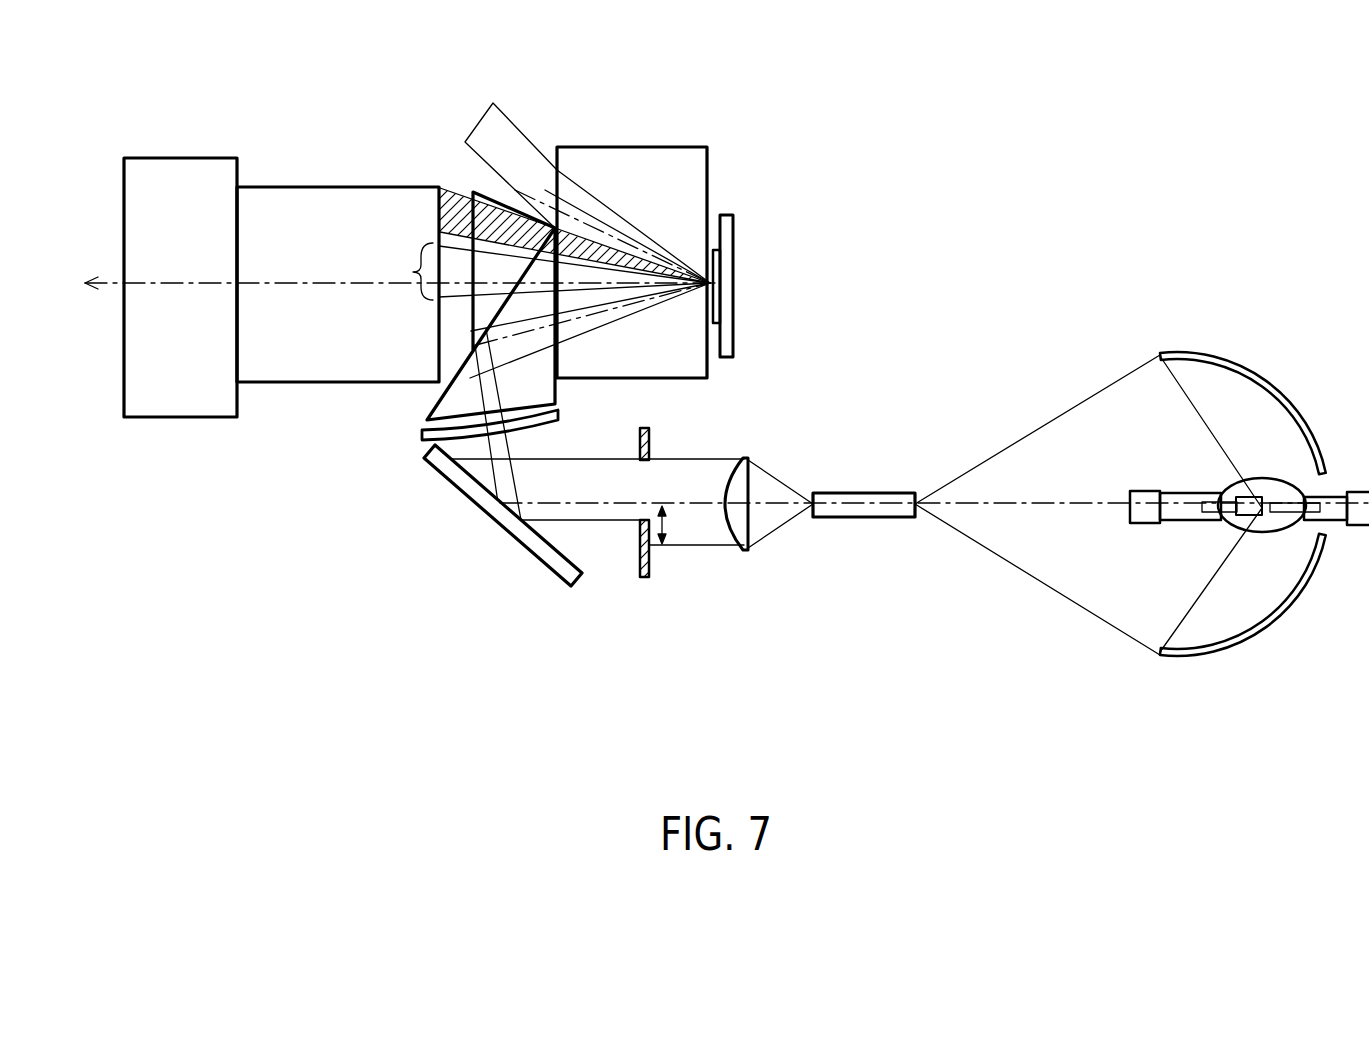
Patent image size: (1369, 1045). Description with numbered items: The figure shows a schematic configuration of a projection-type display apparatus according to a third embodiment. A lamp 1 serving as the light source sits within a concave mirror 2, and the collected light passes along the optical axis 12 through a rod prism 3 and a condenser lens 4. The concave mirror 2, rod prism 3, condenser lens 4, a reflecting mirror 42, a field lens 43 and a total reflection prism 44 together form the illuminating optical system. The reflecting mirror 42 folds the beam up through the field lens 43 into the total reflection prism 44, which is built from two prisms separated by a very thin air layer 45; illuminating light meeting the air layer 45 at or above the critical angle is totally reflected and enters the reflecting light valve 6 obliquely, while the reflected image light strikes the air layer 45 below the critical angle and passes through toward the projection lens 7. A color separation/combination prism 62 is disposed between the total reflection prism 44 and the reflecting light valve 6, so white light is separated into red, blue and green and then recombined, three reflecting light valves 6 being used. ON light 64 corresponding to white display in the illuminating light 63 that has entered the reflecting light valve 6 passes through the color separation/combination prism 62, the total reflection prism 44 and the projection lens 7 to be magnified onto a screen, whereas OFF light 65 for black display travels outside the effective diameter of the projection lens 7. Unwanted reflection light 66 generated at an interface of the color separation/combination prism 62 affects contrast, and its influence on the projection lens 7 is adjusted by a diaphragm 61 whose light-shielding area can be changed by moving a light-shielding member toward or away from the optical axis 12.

The lamp 1 is at (1275, 487).
The concave mirror 2 is at (1253, 626).
The rod prism 3 is at (866, 518).
The condenser lens 4 is at (745, 543).
The reflecting light valve 6 is at (728, 243).
The projection lens 7 is at (273, 360).
The optical axis 12 is at (1084, 507).
The reflecting mirror 42 is at (525, 537).
The field lens 43 is at (423, 438).
The total reflection prism 44 is at (540, 378).
The air layer 45 is at (497, 198).
The diaphragm 61 is at (648, 577).
The color separation/combination prism 62 is at (656, 162).
The illuminating light 63 is at (632, 318).
The ON light 64 is at (413, 273).
The OFF light 65 is at (484, 92).
The unwanted reflection light 66 is at (437, 188).